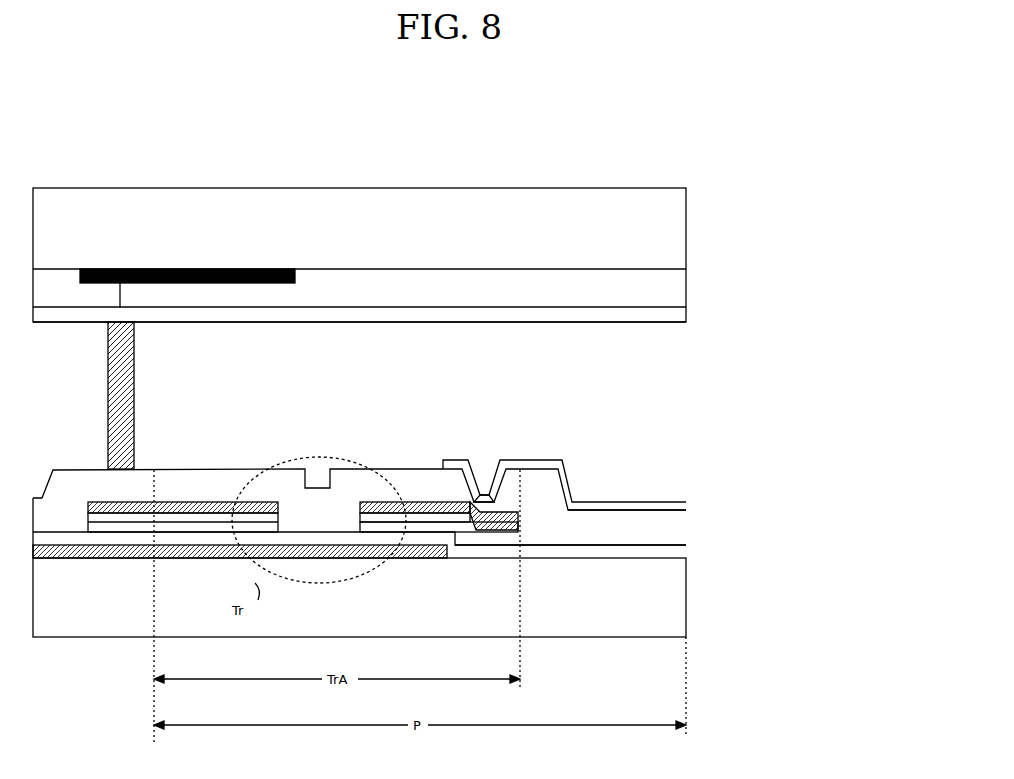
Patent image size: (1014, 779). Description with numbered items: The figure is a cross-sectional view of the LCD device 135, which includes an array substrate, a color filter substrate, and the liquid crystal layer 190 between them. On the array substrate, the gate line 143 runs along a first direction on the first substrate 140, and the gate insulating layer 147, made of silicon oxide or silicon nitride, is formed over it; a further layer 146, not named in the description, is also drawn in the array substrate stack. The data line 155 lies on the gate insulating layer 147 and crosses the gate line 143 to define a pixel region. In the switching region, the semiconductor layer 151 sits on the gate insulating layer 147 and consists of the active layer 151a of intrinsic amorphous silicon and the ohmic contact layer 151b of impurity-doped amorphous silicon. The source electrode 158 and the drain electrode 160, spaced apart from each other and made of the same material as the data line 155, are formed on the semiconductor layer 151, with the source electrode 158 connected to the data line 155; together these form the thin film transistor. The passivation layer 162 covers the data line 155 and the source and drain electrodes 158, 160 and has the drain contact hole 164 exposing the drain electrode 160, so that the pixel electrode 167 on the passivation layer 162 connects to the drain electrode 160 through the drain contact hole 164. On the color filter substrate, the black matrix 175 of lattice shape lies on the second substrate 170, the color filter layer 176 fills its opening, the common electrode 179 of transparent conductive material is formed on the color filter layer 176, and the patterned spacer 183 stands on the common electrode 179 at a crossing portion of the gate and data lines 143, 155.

The LCD device 135 is at (611, 133).
The first substrate 140 is at (672, 626).
The gate line 143 is at (100, 560).
The gate insulating layer 146 is at (352, 538).
The gate insulating layer 147 is at (552, 547).
The semiconductor layer 151 is at (303, 570).
The active layer 151a is at (470, 533).
The ohmic contact layer 151b is at (500, 533).
The data line 155 is at (123, 496).
The source electrode 158 is at (238, 502).
The drain electrode 160 is at (374, 500).
The passivation layer 162 is at (593, 535).
The drain contact hole 164 is at (487, 490).
The pixel electrode 167 is at (603, 502).
The second substrate 170 is at (672, 223).
The black matrix 175 is at (217, 268).
The color filter layer 176 is at (333, 292).
The common electrode 179 is at (397, 313).
The patterned spacer 183 is at (108, 383).
The liquid crystal layer 190 is at (668, 388).